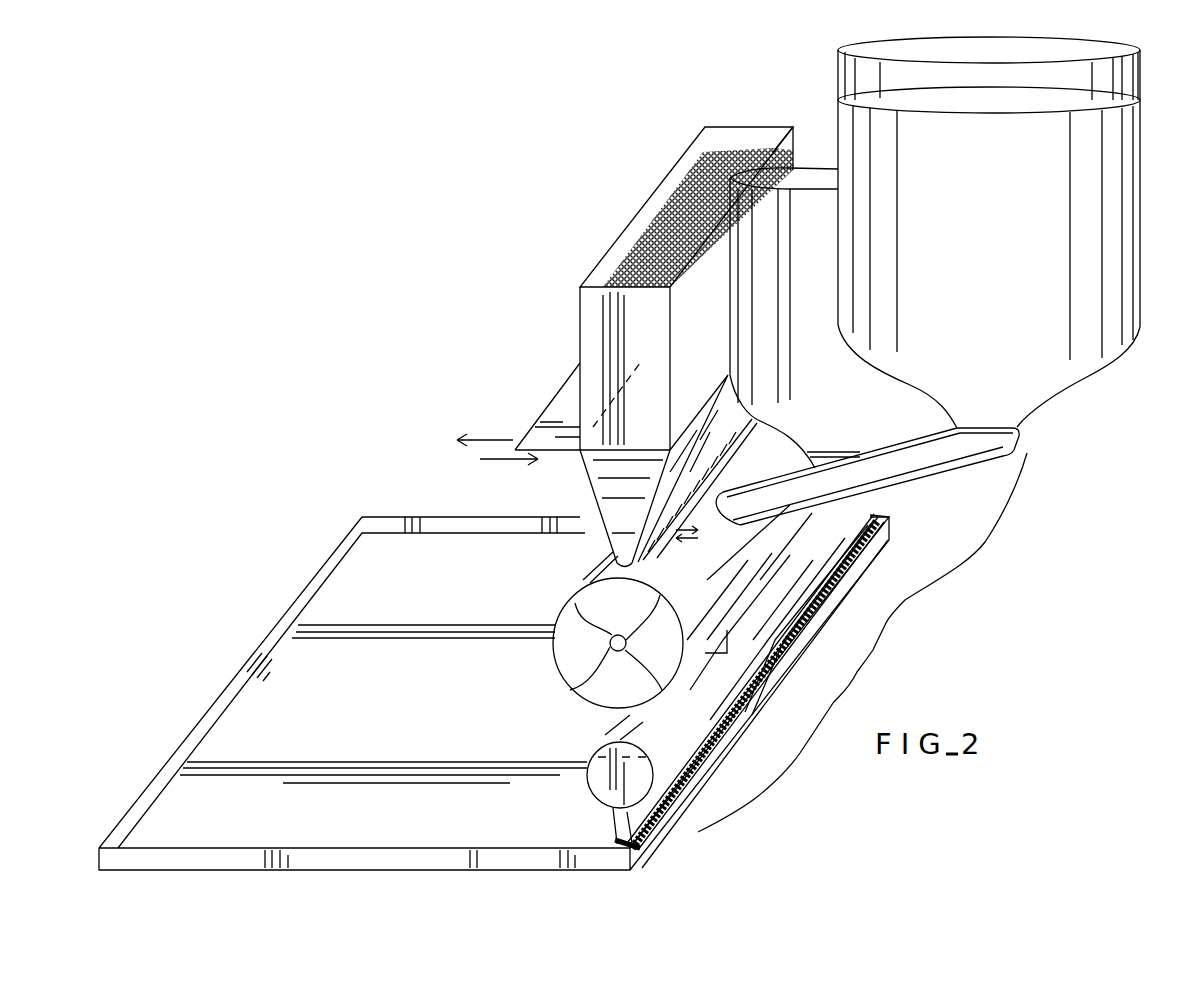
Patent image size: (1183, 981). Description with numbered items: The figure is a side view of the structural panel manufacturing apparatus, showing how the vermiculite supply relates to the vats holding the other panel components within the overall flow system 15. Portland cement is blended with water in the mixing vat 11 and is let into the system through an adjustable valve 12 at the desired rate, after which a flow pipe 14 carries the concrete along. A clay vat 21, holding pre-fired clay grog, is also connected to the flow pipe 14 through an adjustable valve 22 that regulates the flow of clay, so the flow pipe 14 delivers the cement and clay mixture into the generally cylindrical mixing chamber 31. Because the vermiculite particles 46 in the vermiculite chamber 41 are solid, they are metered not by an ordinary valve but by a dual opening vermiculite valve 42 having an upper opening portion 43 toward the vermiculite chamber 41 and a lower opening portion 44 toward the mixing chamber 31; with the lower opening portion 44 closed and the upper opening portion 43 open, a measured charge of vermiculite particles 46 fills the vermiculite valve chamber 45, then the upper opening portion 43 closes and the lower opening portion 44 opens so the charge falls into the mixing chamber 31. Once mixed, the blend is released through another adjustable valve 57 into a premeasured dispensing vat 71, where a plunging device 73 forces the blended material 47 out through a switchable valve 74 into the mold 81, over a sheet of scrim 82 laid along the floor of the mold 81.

The mixing vat 11 is at (1140, 50).
The clay vat 21 is at (820, 170).
The adjustable valve 22 is at (843, 452).
The adjustable valve 12 is at (1020, 425).
The flow pipe 14 is at (997, 458).
The vermiculite particles 46 is at (645, 230).
The vermiculite chamber 41 is at (570, 378).
The upper opening portion 43 is at (550, 420).
The vermiculite valve 42 is at (578, 455).
The vermiculite valve chamber 45 is at (697, 468).
The lower opening portion 44 is at (668, 540).
The blended material 47 is at (880, 520).
The flow system 15 is at (828, 660).
The adjustable valve 57 is at (790, 560).
The scrim 82 is at (358, 622).
The mixing chamber 31 is at (553, 650).
The plunging device 73 is at (600, 757).
The dispensing vat 71 is at (590, 778).
The switchable valve 74 is at (612, 820).
The mold 81 is at (494, 716).